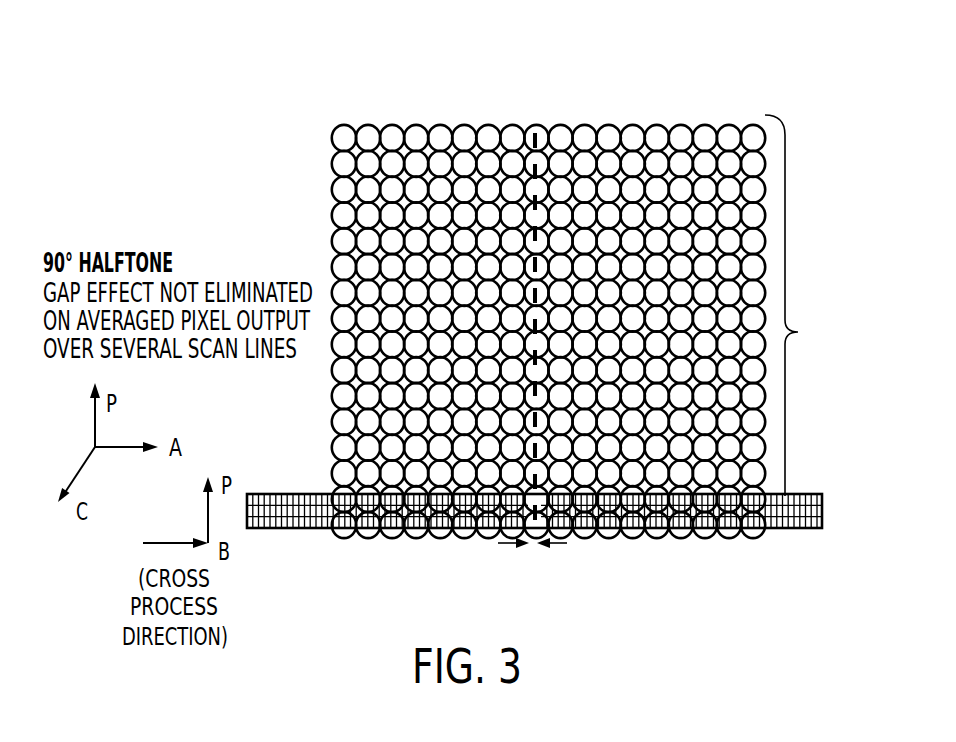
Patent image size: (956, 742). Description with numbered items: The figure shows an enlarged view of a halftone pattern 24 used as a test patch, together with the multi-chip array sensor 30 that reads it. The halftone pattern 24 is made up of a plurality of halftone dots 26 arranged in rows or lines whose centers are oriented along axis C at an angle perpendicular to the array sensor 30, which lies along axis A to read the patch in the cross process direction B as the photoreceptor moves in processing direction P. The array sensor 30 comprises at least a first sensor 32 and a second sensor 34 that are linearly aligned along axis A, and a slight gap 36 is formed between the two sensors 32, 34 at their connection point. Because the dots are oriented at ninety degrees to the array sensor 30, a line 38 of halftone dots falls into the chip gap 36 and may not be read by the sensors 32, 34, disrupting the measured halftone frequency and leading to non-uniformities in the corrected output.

The halftone pattern 24 is at (276, 163).
The halftone dots 26 is at (798, 332).
The array sensor 30 is at (275, 480).
The first sensor 32 is at (429, 530).
The second sensor 34 is at (800, 530).
The gap 36 is at (541, 550).
The line of halftone dots 38 is at (538, 108).